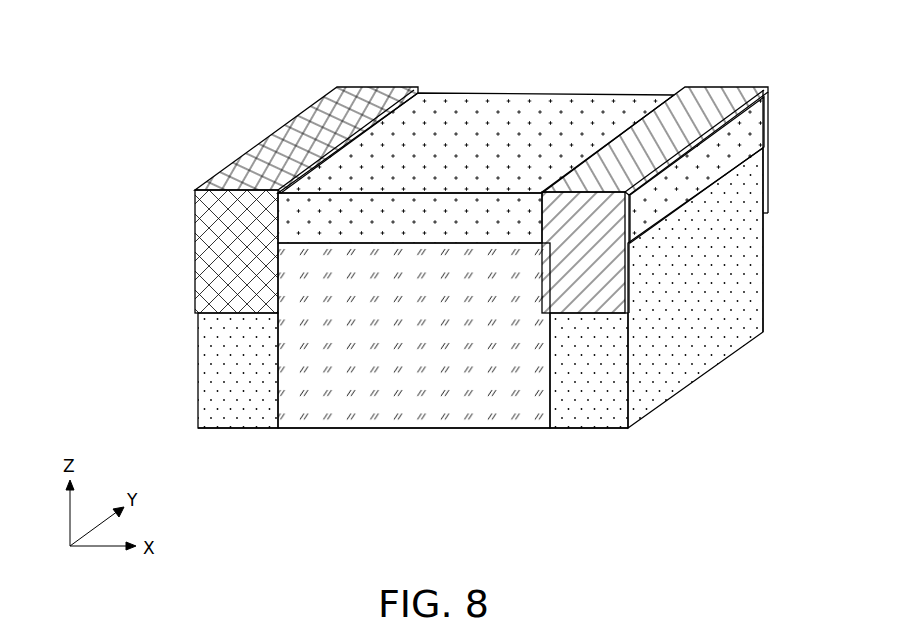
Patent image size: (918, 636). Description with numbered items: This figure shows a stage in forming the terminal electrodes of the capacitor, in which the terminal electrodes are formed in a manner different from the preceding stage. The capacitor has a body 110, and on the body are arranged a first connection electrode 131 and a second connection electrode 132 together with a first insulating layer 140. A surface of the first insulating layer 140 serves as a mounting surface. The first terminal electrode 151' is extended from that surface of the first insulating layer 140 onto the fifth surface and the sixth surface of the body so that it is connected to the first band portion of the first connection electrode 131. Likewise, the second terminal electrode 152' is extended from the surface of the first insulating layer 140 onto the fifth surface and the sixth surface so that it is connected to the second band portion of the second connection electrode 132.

The body 110 is at (410, 390).
The first connection electrode 131 is at (253, 390).
The second connection electrode 132 is at (602, 388).
The first insulating layer 140 is at (545, 127).
The first terminal electrode 151' is at (306, 174).
The second terminal electrode 152' is at (655, 183).